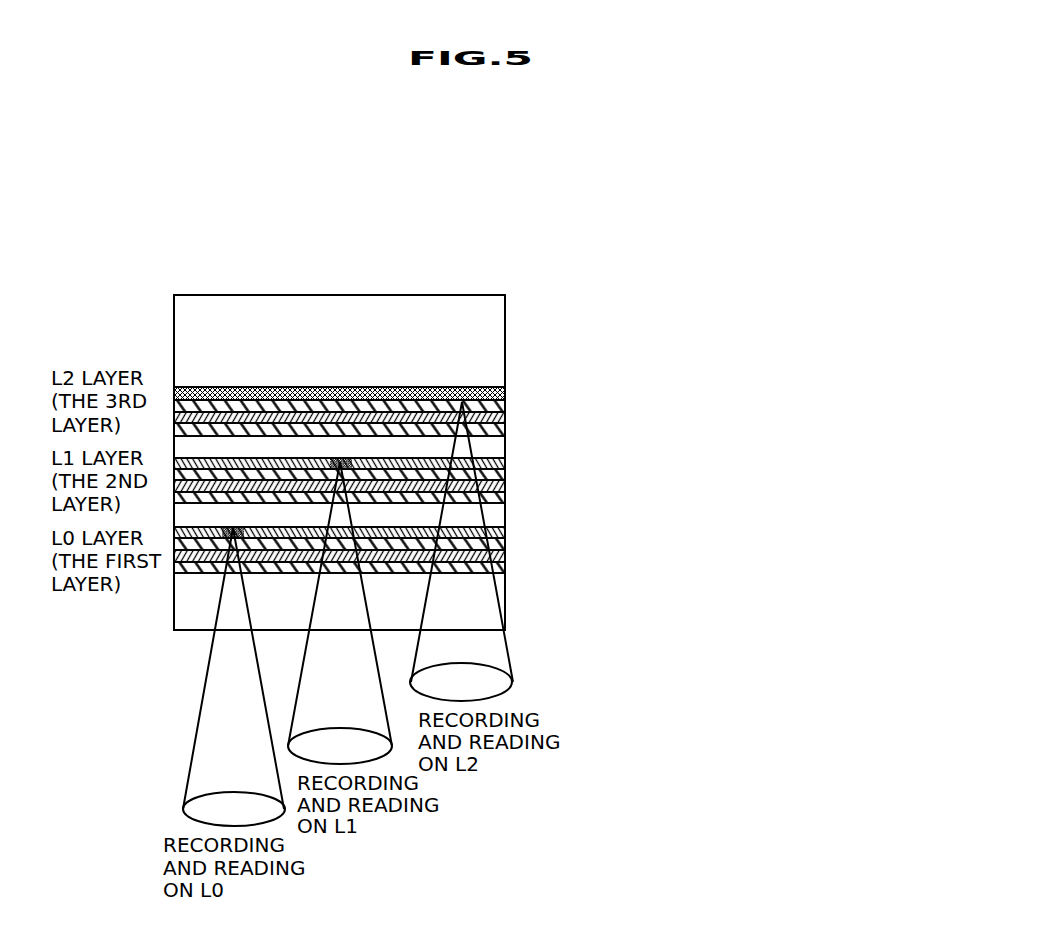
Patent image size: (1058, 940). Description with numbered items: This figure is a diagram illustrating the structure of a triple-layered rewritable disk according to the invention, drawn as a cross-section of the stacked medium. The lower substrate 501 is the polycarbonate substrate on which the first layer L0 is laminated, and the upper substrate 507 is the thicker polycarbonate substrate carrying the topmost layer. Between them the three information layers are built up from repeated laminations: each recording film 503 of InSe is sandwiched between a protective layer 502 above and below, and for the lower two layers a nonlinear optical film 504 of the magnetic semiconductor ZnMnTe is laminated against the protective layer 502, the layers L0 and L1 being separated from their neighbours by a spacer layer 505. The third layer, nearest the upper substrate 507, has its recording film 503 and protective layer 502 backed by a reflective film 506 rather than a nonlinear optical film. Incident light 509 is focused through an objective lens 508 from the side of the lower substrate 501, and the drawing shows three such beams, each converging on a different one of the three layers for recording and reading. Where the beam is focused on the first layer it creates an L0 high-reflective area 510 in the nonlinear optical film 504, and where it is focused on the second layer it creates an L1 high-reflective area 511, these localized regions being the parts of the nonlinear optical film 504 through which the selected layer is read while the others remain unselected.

The lower substrate 501 is at (505, 600).
The protective layer 502 is at (505, 406).
The recording film 503 is at (505, 418).
The nonlinear optical film 504 is at (505, 464).
The spacer layer 505 is at (505, 447).
The reflective film 506 is at (505, 393).
The upper substrate 507 is at (495, 347).
The objective lens 508 is at (513, 685).
The incident light 509 is at (497, 648).
The L0 high-reflective area 510 is at (230, 534).
The L1 high-reflective area 511 is at (340, 458).